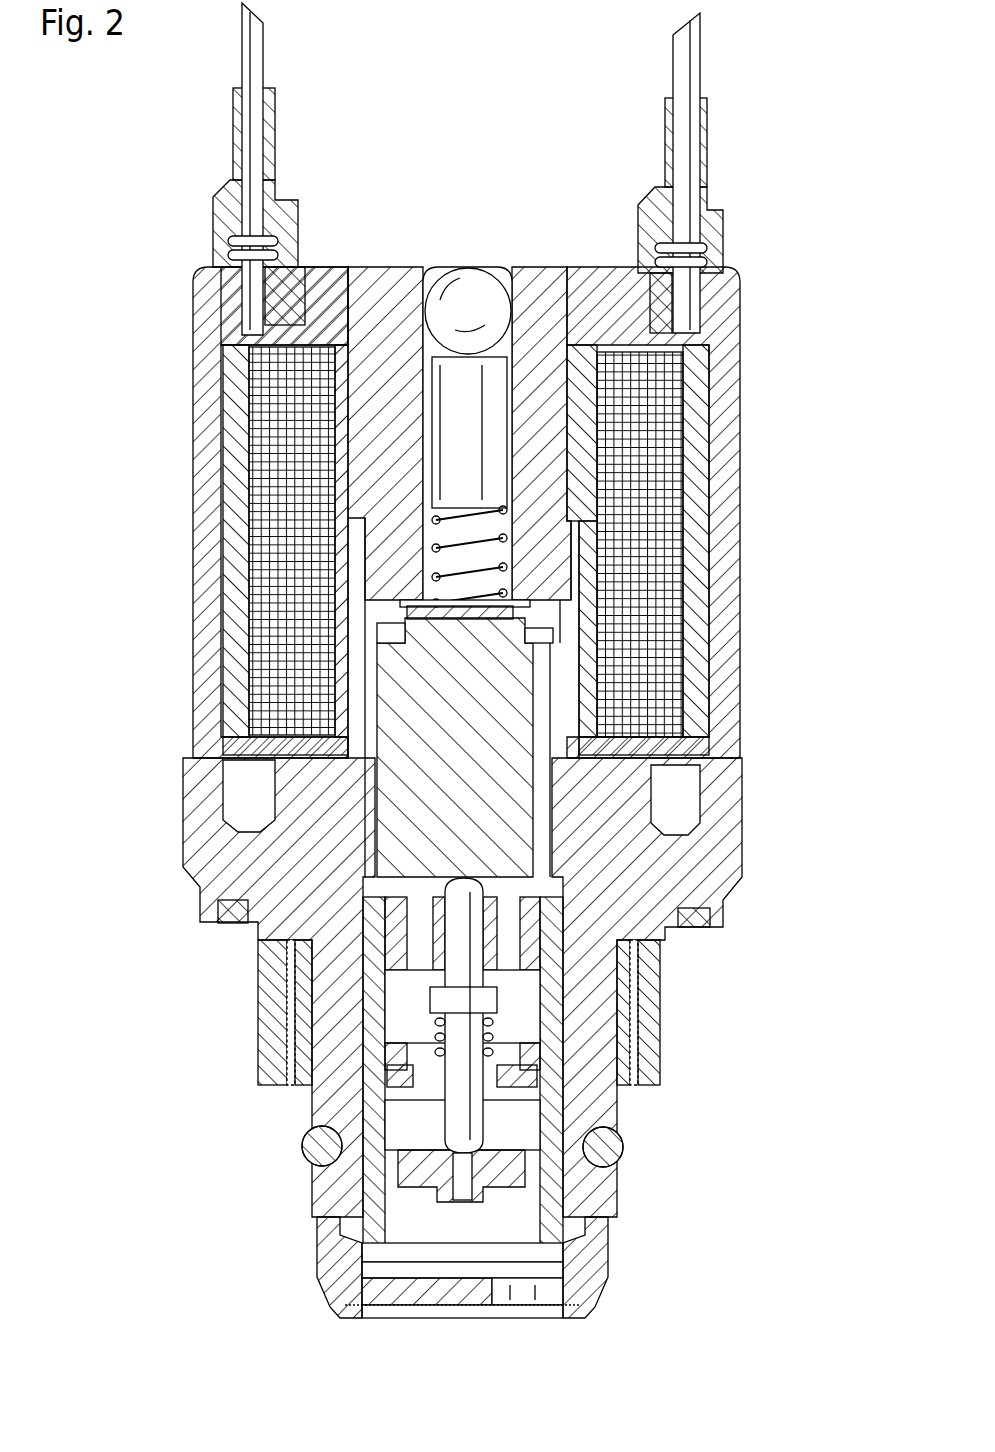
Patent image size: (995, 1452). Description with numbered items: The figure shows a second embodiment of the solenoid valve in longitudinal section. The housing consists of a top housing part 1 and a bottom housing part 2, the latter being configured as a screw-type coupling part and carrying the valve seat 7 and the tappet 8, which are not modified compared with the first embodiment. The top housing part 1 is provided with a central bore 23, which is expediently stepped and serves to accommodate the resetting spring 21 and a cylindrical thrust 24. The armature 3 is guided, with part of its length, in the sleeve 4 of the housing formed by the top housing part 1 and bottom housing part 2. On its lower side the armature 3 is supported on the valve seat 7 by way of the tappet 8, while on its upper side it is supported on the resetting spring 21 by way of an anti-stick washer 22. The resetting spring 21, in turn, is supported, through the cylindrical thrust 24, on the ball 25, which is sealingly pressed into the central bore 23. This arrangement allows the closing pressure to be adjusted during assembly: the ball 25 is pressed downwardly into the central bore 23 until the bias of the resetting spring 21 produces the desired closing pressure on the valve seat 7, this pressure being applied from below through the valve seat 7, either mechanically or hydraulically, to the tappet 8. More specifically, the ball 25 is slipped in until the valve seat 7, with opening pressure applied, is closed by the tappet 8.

The top housing part 1 is at (385, 414).
The bottom housing part 2 is at (338, 1098).
The armature 3 is at (500, 717).
The sleeve 4 is at (370, 696).
The valve seat 7 is at (510, 1175).
The tappet 8 is at (462, 950).
The resetting spring 21 is at (503, 567).
The anti-stick washer 22 is at (585, 611).
The central bore 23 is at (440, 265).
The cylindrical thrust 24 is at (462, 417).
The ball 25 is at (485, 292).